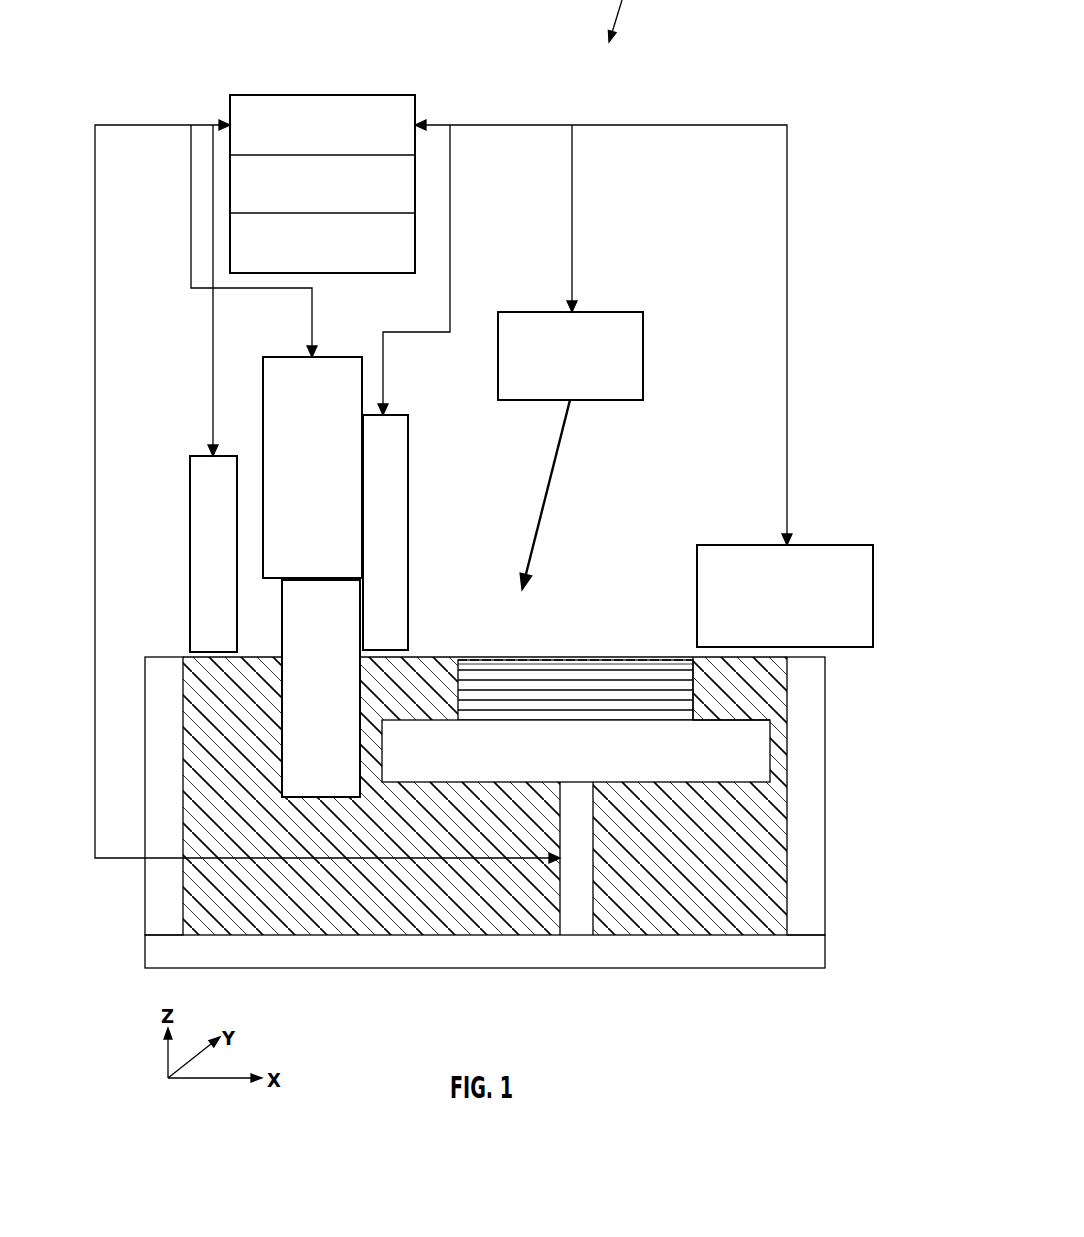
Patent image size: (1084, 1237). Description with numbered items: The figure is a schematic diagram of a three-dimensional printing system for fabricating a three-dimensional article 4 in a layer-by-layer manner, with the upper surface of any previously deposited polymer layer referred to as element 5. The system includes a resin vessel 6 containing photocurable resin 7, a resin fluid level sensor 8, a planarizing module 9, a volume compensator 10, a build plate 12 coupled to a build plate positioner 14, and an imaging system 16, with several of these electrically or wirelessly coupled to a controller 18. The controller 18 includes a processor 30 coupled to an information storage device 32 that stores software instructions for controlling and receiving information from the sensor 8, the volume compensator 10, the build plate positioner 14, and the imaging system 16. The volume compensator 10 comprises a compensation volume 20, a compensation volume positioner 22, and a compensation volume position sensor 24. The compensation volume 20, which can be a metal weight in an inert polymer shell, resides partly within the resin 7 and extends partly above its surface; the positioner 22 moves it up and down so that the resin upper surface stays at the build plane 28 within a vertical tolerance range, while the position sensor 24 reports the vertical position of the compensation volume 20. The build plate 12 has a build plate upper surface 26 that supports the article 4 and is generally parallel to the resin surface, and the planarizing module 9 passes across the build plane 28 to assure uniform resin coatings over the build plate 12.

The three-dimensional article 4 is at (565, 675).
The upper surface of polymer layer 5 is at (534, 660).
The resin vessel 6 is at (825, 782).
The photocurable resin 7 is at (770, 878).
The resin fluid level sensor 8 is at (190, 545).
The planarizing module 9 is at (873, 593).
The volume compensator 10 is at (239, 366).
The build plate 12 is at (772, 747).
The build plate positioner 14 is at (597, 833).
The imaging system 16 is at (643, 336).
The controller 18 is at (360, 95).
The compensation volume 20 is at (282, 682).
The compensation volume positioner 22 is at (263, 467).
The compensation volume position sensor 24 is at (409, 530).
The build plate upper surface 26 is at (733, 720).
The build plane 28 is at (614, 660).
The processor 30 is at (415, 184).
The information storage device 32 is at (415, 242).